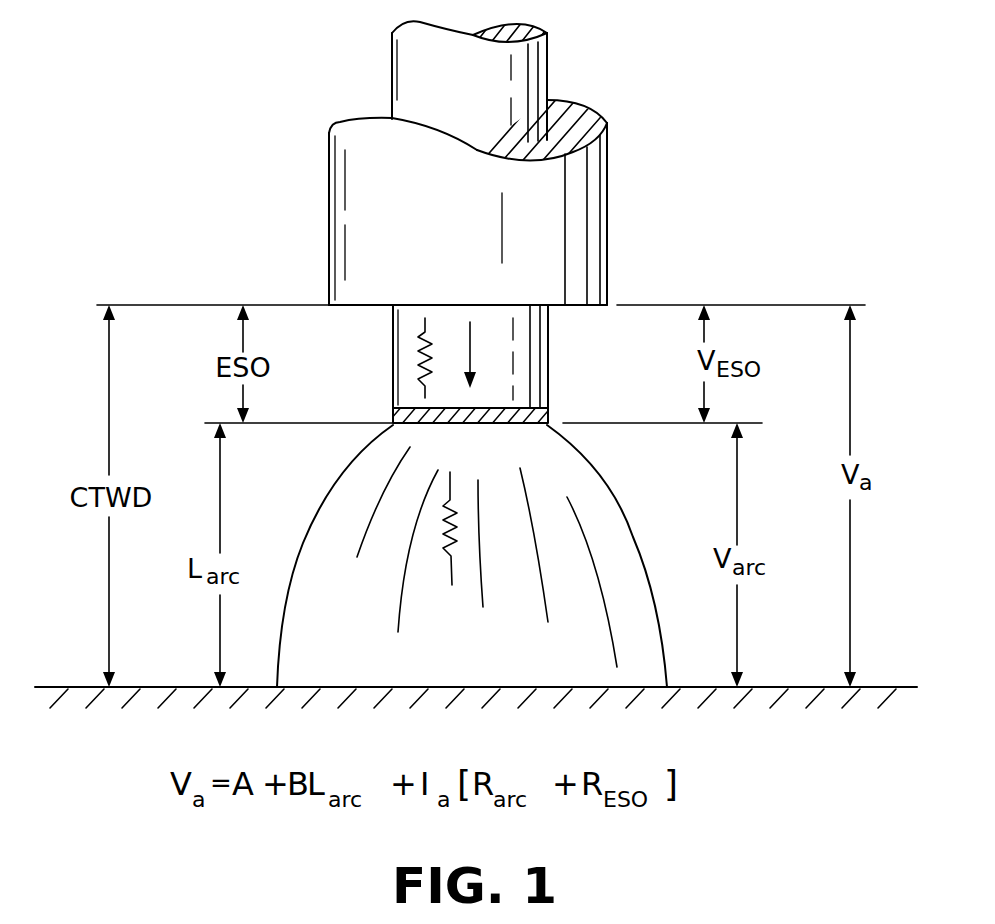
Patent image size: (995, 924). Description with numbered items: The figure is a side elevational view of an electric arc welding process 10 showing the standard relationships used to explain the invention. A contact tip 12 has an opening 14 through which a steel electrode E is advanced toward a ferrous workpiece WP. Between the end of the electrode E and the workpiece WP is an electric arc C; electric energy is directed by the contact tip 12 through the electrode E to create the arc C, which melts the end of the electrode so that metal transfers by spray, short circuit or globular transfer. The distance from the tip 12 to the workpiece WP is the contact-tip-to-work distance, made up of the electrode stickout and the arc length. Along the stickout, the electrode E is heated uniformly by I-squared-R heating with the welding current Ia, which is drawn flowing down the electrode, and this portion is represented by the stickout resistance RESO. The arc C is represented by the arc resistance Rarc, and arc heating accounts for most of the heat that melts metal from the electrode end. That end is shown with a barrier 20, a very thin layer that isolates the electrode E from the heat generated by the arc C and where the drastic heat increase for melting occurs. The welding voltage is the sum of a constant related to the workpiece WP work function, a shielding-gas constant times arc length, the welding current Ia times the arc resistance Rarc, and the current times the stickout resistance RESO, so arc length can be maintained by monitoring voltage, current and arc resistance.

The electric arc welding process 10 is at (286, 158).
The contact tip 12 is at (597, 197).
The opening 14 is at (552, 121).
The barrier 20 is at (566, 407).
The steel electrode E is at (550, 333).
The electric arc C is at (631, 503).
The ferrous workpiece WP is at (768, 683).
The stickout resistance RESO is at (420, 352).
The arc resistance Rarc is at (448, 542).
The welding current Ia is at (481, 355).